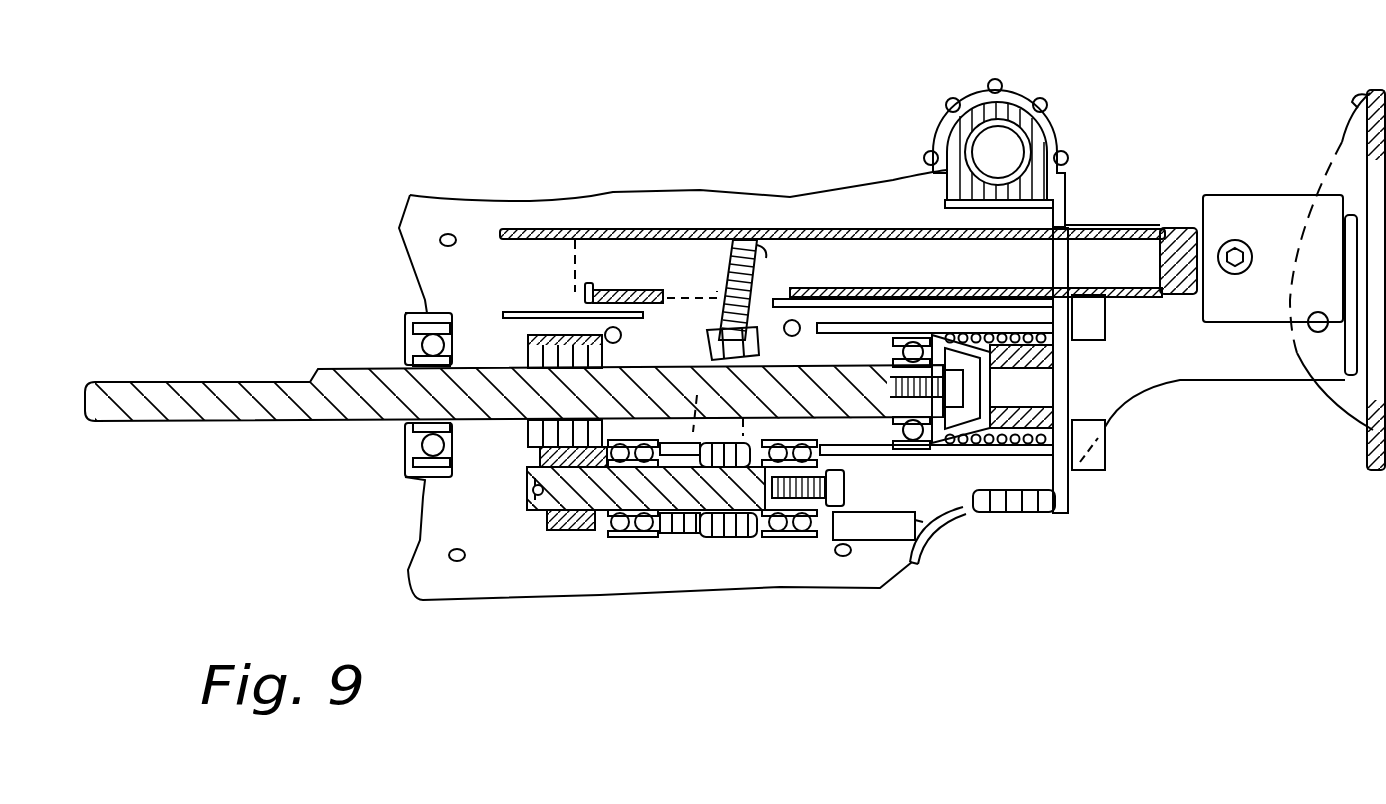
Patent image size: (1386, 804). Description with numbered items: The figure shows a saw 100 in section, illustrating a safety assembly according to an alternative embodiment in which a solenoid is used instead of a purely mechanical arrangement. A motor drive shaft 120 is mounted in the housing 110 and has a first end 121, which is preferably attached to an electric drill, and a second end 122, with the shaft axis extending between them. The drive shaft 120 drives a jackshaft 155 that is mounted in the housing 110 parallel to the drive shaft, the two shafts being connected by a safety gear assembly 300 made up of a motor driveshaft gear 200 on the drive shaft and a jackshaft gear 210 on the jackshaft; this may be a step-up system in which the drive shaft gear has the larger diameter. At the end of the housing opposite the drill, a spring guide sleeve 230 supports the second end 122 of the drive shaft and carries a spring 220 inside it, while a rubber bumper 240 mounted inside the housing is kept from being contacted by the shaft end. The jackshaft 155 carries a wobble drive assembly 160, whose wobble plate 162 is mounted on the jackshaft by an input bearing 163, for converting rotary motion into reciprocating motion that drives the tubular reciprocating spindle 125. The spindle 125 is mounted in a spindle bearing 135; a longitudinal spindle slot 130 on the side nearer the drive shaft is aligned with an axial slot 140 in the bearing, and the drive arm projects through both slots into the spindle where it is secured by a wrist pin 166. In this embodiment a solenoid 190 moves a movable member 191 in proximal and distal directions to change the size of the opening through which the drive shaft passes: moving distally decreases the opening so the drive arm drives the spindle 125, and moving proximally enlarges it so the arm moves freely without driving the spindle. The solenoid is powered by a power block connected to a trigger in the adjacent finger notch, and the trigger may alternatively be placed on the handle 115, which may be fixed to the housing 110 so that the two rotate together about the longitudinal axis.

The saw 100 is at (849, 147).
The housing 110 is at (446, 197).
The handle 115 is at (1018, 93).
The motor drive shaft 120 is at (145, 380).
The first end 121 is at (80, 410).
The second end 122 is at (937, 366).
The reciprocating spindle 125 is at (1121, 226).
The spindle slot 130 is at (783, 294).
The spindle bearing 135 is at (530, 229).
The axial slot 140 is at (638, 306).
The jackshaft 155 is at (527, 513).
The wobble drive assembly 160 is at (775, 552).
The wobble plate 162 is at (733, 540).
The input bearing 163 is at (673, 533).
The wrist pin 166 is at (773, 247).
The solenoid 190 is at (593, 284).
The movable member 191 is at (688, 297).
The motor driveshaft gear 200 is at (523, 347).
The jackshaft gear 210 is at (553, 533).
The spring 220 is at (950, 447).
The spring guide sleeve 230 is at (1020, 455).
The rubber bumper 240 is at (970, 455).
The safety gear assembly 300 is at (488, 494).